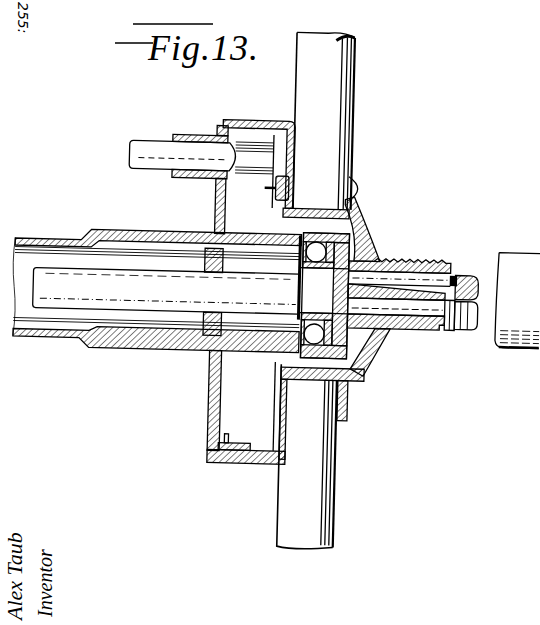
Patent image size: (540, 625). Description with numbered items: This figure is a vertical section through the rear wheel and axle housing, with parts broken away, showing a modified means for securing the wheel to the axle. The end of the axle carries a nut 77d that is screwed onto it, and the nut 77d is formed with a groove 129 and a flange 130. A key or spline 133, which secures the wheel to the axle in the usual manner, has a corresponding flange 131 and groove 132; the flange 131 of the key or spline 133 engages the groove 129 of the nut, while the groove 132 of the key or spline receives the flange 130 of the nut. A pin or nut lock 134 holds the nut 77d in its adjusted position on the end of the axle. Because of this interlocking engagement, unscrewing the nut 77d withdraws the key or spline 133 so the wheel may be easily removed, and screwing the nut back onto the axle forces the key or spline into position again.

The nut 77d is at (471, 328).
The groove 129 is at (454, 328).
The flange 130 is at (450, 327).
The flange 131 is at (458, 283).
The groove 132 is at (451, 273).
The key or spline 133 is at (393, 278).
The pin or nut lock 134 is at (481, 314).